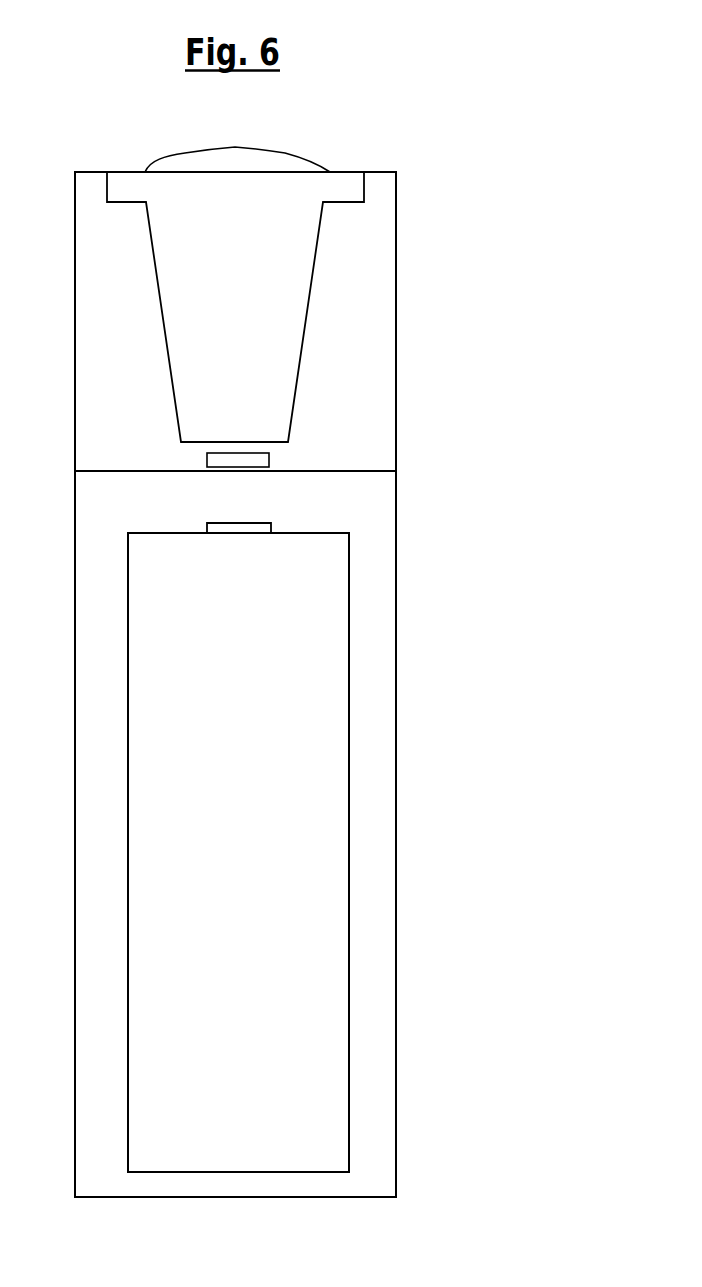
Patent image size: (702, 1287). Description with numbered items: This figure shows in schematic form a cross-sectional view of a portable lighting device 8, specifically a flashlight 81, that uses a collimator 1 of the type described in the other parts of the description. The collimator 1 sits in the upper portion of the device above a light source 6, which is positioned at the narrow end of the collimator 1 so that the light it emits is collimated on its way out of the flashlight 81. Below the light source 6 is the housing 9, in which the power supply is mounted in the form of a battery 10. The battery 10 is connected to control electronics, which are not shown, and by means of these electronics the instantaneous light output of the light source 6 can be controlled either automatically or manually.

The portable lighting device 8 is at (311, 641).
The flashlight 81 is at (412, 160).
The collimator 1 is at (247, 270).
The light source 6 is at (263, 460).
The housing 9 is at (396, 680).
The battery 10 is at (262, 838).